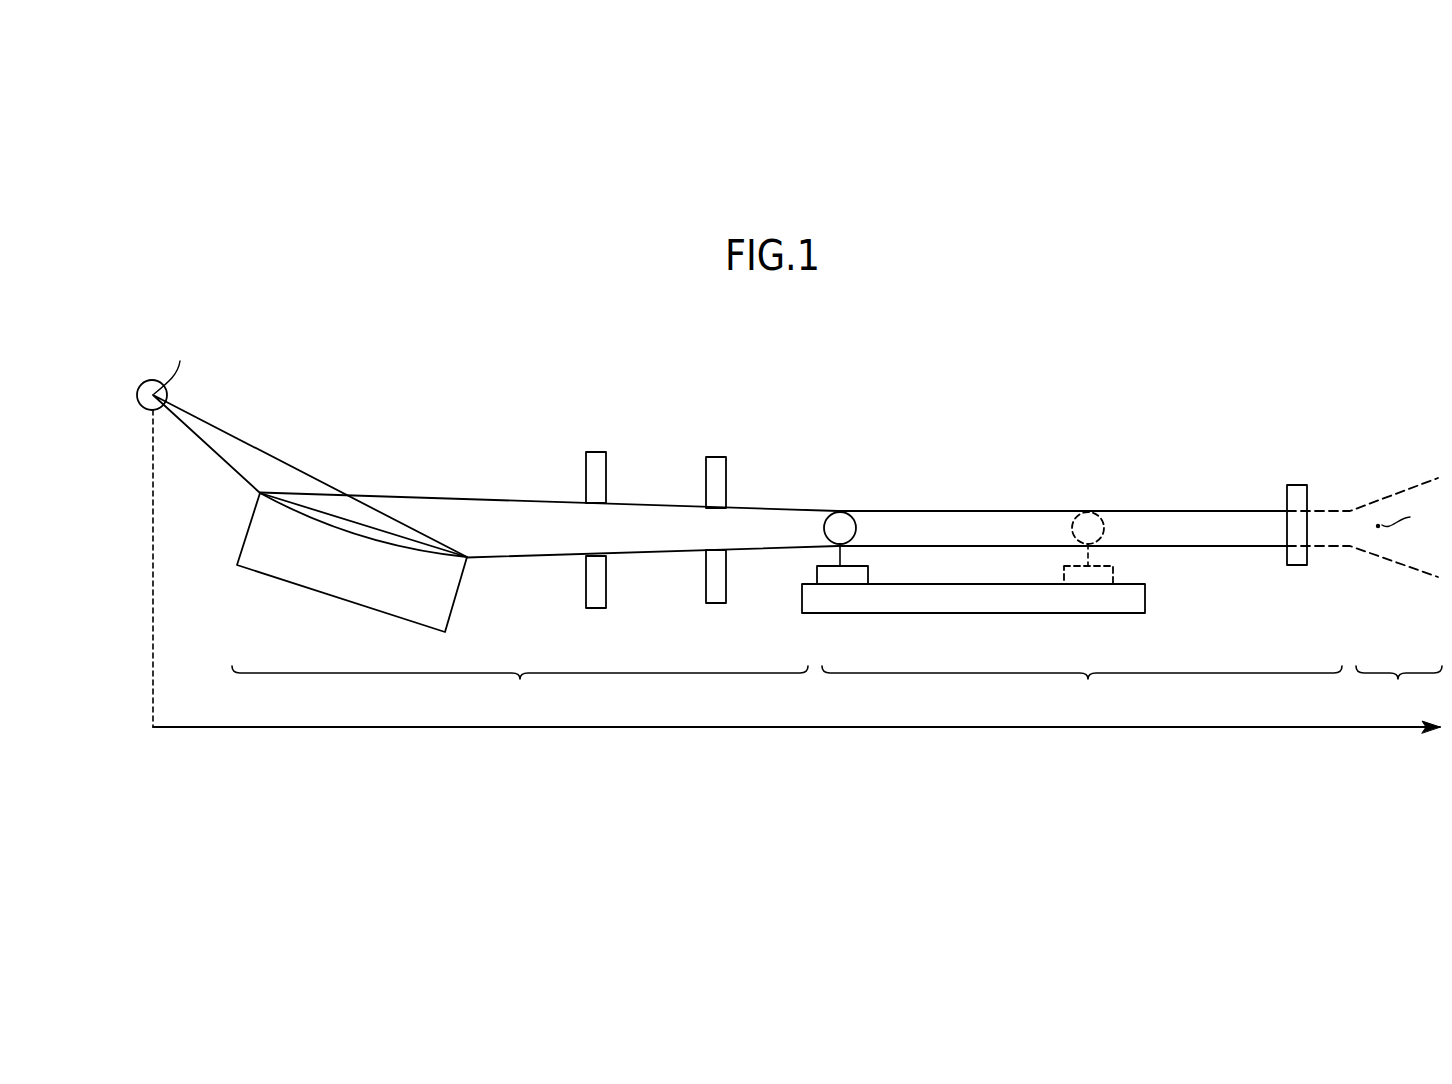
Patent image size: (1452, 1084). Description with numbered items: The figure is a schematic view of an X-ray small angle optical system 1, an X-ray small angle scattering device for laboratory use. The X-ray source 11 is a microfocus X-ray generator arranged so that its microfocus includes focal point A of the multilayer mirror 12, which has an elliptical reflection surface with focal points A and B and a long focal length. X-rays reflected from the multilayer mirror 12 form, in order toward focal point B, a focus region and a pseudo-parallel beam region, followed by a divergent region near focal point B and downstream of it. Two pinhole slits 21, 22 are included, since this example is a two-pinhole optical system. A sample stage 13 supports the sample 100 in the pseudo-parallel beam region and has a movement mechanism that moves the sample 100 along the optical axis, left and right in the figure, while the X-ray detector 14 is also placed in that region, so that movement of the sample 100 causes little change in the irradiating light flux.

The X-ray small angle optical system 1 is at (1044, 397).
The X-ray source 11 is at (146, 382).
The multilayer mirror 12 is at (450, 597).
The pinhole slit 21 is at (593, 452).
The pinhole slit 22 is at (715, 457).
The sample 100 is at (856, 528).
The sample stage 13 is at (1145, 599).
The X-ray detector 14 is at (1300, 483).